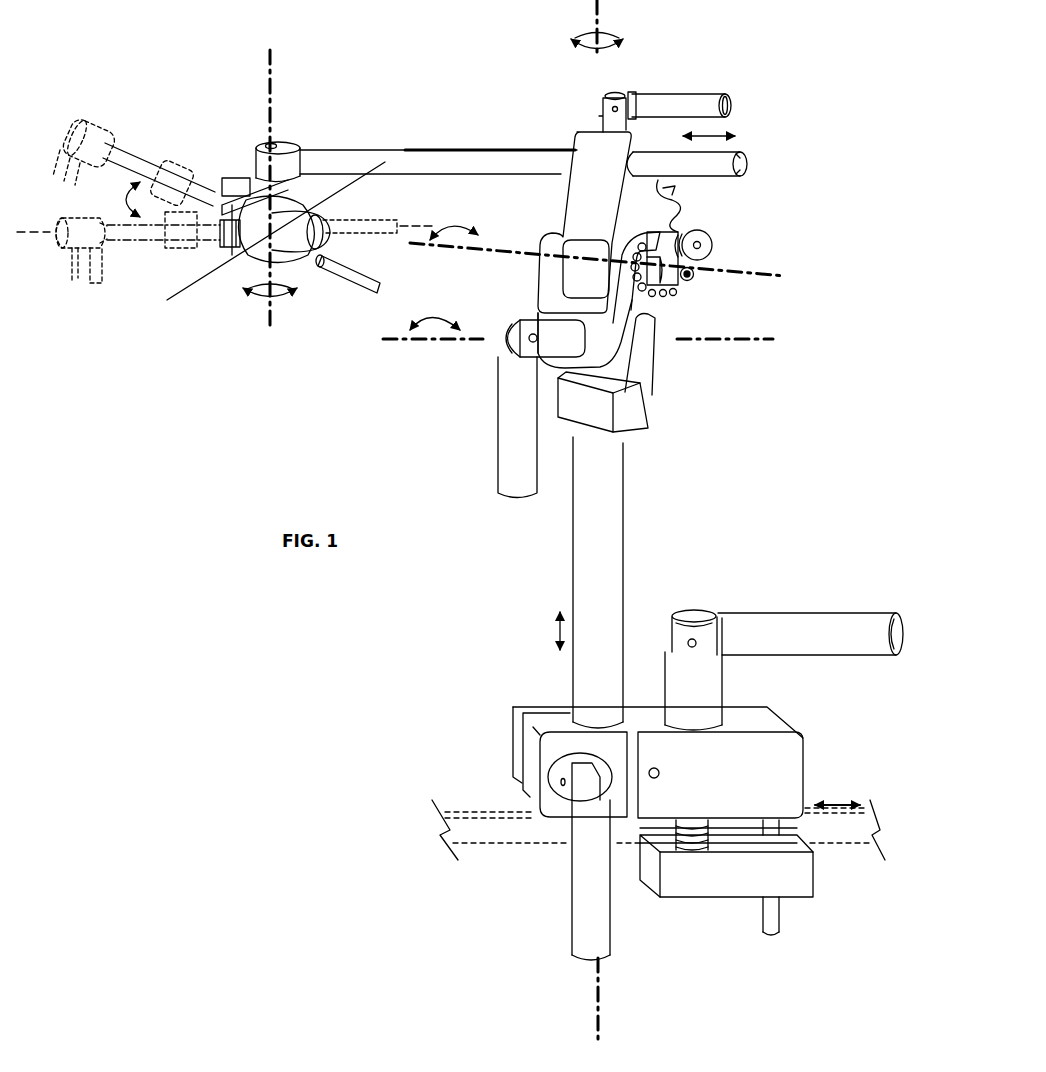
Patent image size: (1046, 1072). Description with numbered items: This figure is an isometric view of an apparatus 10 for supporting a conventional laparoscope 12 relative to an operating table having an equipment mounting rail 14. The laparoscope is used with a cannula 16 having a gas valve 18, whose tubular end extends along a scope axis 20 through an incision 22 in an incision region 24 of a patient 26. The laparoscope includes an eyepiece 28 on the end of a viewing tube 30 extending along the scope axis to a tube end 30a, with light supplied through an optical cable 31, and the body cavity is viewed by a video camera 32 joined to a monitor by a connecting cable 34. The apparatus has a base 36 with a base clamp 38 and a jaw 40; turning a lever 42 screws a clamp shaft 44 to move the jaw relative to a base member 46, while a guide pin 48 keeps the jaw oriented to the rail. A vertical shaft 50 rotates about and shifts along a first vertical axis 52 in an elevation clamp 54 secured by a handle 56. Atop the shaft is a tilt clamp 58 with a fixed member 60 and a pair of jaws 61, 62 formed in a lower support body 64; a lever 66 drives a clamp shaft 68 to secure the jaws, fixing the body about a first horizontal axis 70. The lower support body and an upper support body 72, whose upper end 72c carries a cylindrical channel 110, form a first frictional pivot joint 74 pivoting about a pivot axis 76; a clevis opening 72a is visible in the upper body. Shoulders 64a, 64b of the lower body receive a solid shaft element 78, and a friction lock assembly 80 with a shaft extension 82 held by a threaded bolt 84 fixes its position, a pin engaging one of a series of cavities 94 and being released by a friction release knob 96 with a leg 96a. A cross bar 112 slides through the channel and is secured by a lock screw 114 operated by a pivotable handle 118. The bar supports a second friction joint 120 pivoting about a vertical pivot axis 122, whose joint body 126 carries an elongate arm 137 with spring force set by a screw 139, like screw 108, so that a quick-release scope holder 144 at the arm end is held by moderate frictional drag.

The apparatus 10 is at (760, 82).
The laparoscope 12 is at (137, 150).
The equipment mounting rail 14 is at (508, 845).
The cannula 16 is at (335, 238).
The gas valve 18 is at (172, 245).
The scope axis 20 is at (418, 222).
The incision 22 is at (284, 212).
The incision region 24 is at (247, 263).
The patient 26 is at (410, 148).
The eyepiece 28 is at (97, 222).
The viewing tube 30 is at (135, 236).
The tube end 30a is at (398, 217).
The optical cable 31 is at (93, 283).
The video camera 32 is at (63, 243).
The connecting cable 34 is at (74, 272).
The base 36 is at (498, 722).
The base clamp 38 is at (822, 878).
The jaw 40 is at (705, 882).
The lever 42 is at (766, 612).
The clamp shaft 44 is at (708, 677).
The base member 46 is at (810, 768).
The guide pin 48 is at (773, 917).
The vertical shaft 50 is at (626, 527).
The first vertical axis 52 is at (603, 20).
The elevation clamp 54 is at (564, 708).
The handle 56 is at (570, 896).
The tilt clamp 58 is at (692, 373).
The fixed member 60 is at (640, 398).
The jaw 61 is at (574, 332).
The jaw 62 is at (653, 343).
The lower support body 64 is at (536, 287).
The shoulder 64a is at (539, 249).
The shoulder 64b is at (615, 278).
The lever 66 is at (494, 436).
The clamp shaft 68 is at (545, 338).
The first horizontal axis 70 is at (404, 344).
The upper support body 72 is at (580, 197).
The clevis opening 72a is at (561, 272).
The upper end 72c is at (583, 133).
The first frictional pivot joint 74 is at (618, 237).
The pivot axis 76 is at (426, 252).
The solid shaft element 78 is at (642, 281).
The friction lock assembly 80 is at (747, 222).
The shaft extension 82 is at (661, 240).
The threaded bolt 84 is at (696, 278).
The cavities 94 is at (675, 294).
The friction release knob 96 is at (712, 247).
The leg 96a is at (688, 229).
The screw 108 is at (680, 190).
The channel 110 is at (646, 148).
The cross bar 112 is at (742, 163).
The lock screw 114 is at (620, 96).
The pivotable handle 118 is at (684, 100).
The second friction joint 120 is at (292, 104).
The vertical pivot axis 122 is at (276, 77).
The joint body 126 is at (254, 158).
The elongate arm 137 is at (280, 191).
The screw 139 is at (268, 140).
The quick-release scope holder 144 is at (222, 250).